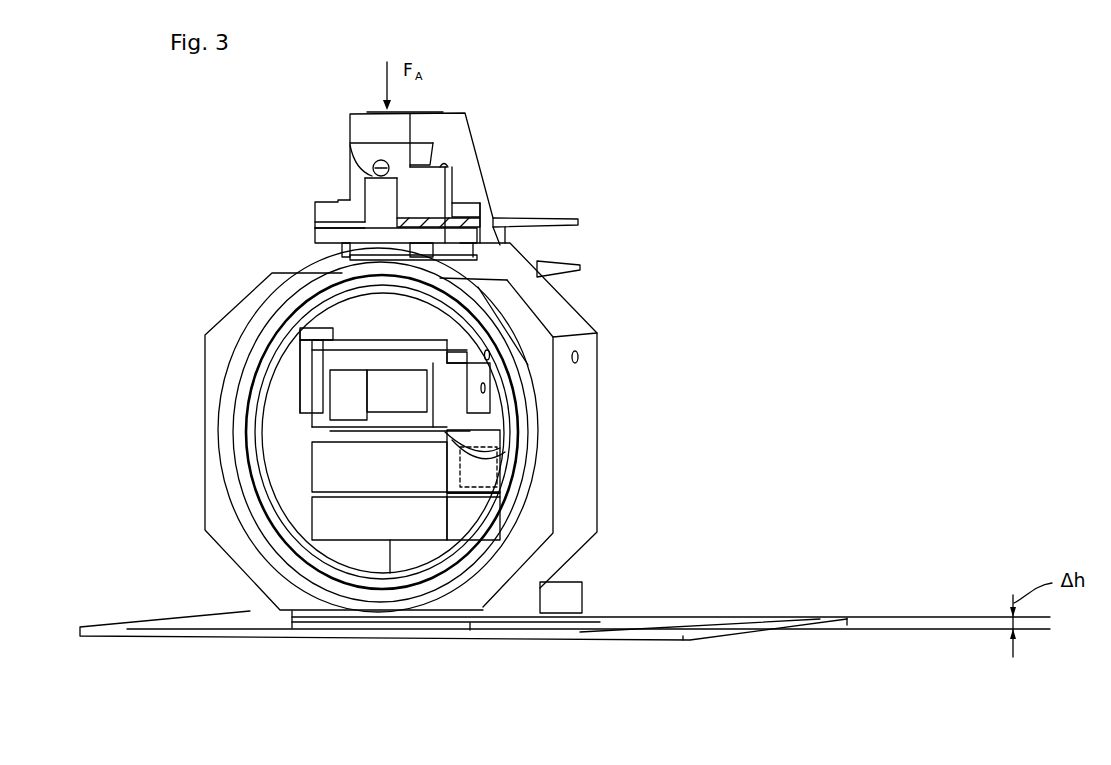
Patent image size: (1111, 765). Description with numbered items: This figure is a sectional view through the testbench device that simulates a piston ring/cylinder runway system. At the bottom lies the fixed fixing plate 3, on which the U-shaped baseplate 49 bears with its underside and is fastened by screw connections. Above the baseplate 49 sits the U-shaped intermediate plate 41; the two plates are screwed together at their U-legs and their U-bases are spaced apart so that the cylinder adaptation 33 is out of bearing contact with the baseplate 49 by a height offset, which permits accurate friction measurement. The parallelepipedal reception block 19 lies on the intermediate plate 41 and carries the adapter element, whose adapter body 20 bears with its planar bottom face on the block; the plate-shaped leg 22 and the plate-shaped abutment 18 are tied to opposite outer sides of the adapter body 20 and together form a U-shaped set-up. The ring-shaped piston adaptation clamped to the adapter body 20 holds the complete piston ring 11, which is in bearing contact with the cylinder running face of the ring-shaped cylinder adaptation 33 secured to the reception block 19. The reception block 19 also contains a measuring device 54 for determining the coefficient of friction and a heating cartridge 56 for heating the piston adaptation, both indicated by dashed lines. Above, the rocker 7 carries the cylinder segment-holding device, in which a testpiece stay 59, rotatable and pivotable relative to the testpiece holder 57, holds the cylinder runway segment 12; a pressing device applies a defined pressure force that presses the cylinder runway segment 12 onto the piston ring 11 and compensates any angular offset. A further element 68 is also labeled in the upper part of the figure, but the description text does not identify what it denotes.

The fixing plate 3 is at (651, 628).
The rocker 7 is at (568, 270).
The piston ring 11 is at (517, 513).
The cylinder runway segment 12 is at (323, 255).
The plate-shaped abutment 18 is at (308, 373).
The reception block 19 is at (323, 406).
The adapter body 20 is at (382, 322).
The plate-shaped leg 22 is at (478, 389).
The cylinder adaptation 33 is at (556, 307).
The intermediate plate 41 is at (340, 470).
The baseplate 49 is at (368, 512).
The measuring device 54 is at (468, 450).
The heating cartridge 56 is at (342, 457).
The testpiece holder 57 is at (352, 215).
The testpiece stay 59 is at (323, 235).
The pivot pin 68 is at (366, 163).